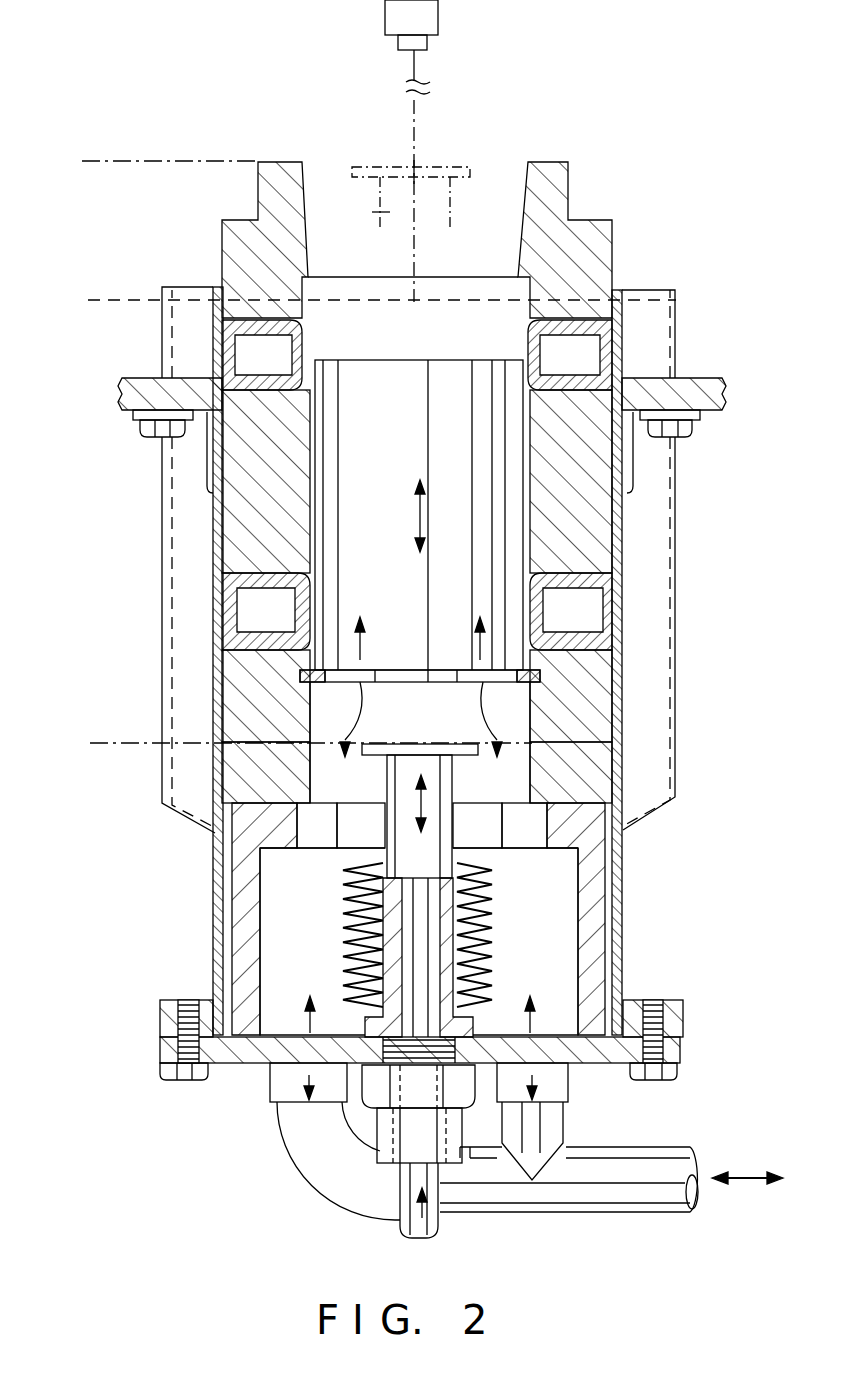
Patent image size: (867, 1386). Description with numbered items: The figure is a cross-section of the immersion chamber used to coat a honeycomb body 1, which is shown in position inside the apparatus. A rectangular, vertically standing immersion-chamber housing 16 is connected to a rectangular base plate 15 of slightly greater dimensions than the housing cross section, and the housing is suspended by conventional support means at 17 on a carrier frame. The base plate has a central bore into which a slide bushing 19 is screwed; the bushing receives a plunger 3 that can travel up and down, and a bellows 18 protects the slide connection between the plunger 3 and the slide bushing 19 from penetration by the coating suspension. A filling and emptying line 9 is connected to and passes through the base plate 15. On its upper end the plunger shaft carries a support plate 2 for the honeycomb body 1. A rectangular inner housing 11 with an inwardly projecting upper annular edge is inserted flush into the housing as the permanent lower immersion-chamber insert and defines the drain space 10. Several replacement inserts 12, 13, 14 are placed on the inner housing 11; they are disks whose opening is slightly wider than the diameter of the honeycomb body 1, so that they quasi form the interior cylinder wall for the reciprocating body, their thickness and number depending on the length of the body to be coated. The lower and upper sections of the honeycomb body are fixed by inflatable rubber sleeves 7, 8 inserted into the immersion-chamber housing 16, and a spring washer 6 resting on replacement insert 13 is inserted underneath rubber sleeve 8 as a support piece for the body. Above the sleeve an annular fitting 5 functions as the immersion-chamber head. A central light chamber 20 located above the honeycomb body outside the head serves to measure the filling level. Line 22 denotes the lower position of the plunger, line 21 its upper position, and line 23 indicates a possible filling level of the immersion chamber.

The honeycomb body 1 is at (375, 481).
The support plate 2 is at (457, 170).
The plunger 3 is at (380, 212).
The annular fitting 5 is at (563, 190).
The spring washer 6 is at (537, 680).
The inflatable rubber sleeve 7 is at (302, 352).
The inflatable rubber sleeve 8 is at (300, 610).
The filling and emptying line 9 is at (293, 1145).
The drain space 10 is at (563, 968).
The inner housing 11 is at (597, 898).
The replacement insert 12 is at (602, 767).
The replacement insert 13 is at (590, 708).
The replacement insert 14 is at (605, 537).
The base plate 15 is at (603, 1060).
The immersion-chamber housing 16 is at (218, 913).
The support means 17 is at (690, 412).
The bellows 18 is at (347, 935).
The slide bushing 19 is at (377, 1138).
The light chamber 20 is at (437, 6).
The line 21 is at (95, 160).
The line 22 is at (103, 740).
The line 23 is at (90, 298).